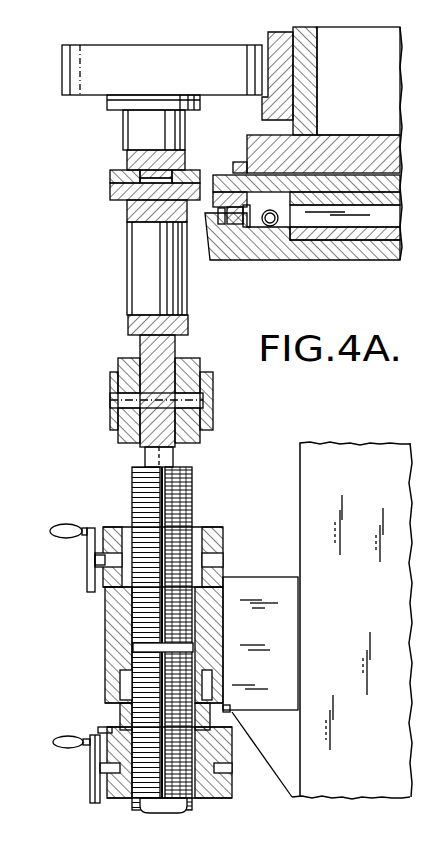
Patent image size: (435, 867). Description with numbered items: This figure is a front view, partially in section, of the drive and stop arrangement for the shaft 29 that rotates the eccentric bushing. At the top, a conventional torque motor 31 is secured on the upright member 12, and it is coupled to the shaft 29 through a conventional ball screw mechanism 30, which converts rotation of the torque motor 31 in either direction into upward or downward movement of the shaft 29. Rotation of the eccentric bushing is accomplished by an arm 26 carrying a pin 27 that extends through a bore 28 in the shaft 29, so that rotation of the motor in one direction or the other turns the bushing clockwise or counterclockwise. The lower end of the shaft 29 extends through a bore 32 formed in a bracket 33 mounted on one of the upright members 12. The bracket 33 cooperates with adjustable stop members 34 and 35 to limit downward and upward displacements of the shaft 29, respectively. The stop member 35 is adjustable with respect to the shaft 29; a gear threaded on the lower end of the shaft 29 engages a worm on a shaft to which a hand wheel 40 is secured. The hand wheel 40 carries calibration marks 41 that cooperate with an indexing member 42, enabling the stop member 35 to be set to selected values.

The upright member 12 is at (306, 482).
The arm 26 is at (193, 366).
The pin 27 is at (122, 403).
The bore 28 is at (175, 442).
The shaft 29 is at (152, 343).
The ball screw mechanism 30 is at (127, 136).
The torque motor 31 is at (68, 78).
The bore 32 is at (134, 620).
The bracket 33 is at (272, 586).
The adjustable stop member 34 is at (212, 517).
The adjustable stop member 35 is at (102, 714).
The hand wheel 40 is at (90, 787).
The calibration marks 41 is at (90, 746).
The indexing member 42 is at (100, 728).